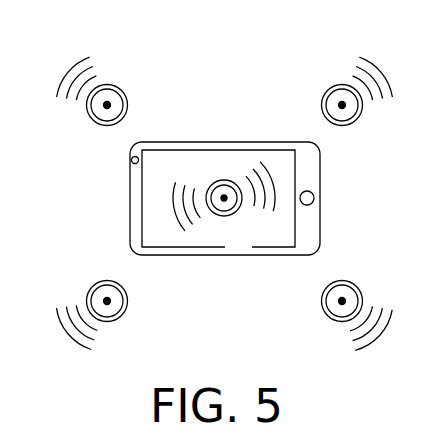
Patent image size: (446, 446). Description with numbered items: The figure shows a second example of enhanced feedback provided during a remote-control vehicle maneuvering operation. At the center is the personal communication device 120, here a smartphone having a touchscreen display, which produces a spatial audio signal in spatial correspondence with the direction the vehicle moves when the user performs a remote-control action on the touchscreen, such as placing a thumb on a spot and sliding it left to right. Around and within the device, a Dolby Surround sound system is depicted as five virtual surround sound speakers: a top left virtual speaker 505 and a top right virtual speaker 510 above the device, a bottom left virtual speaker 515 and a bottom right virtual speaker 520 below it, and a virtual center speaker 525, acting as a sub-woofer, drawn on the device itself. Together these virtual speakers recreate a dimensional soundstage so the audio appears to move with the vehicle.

The personal communication device 120 is at (207, 142).
The top left virtual speaker 505 is at (125, 80).
The top right virtual speaker 510 is at (323, 87).
The bottom left virtual speaker 515 is at (85, 280).
The bottom right virtual speaker 520 is at (362, 275).
The virtual center speaker 525 is at (232, 221).